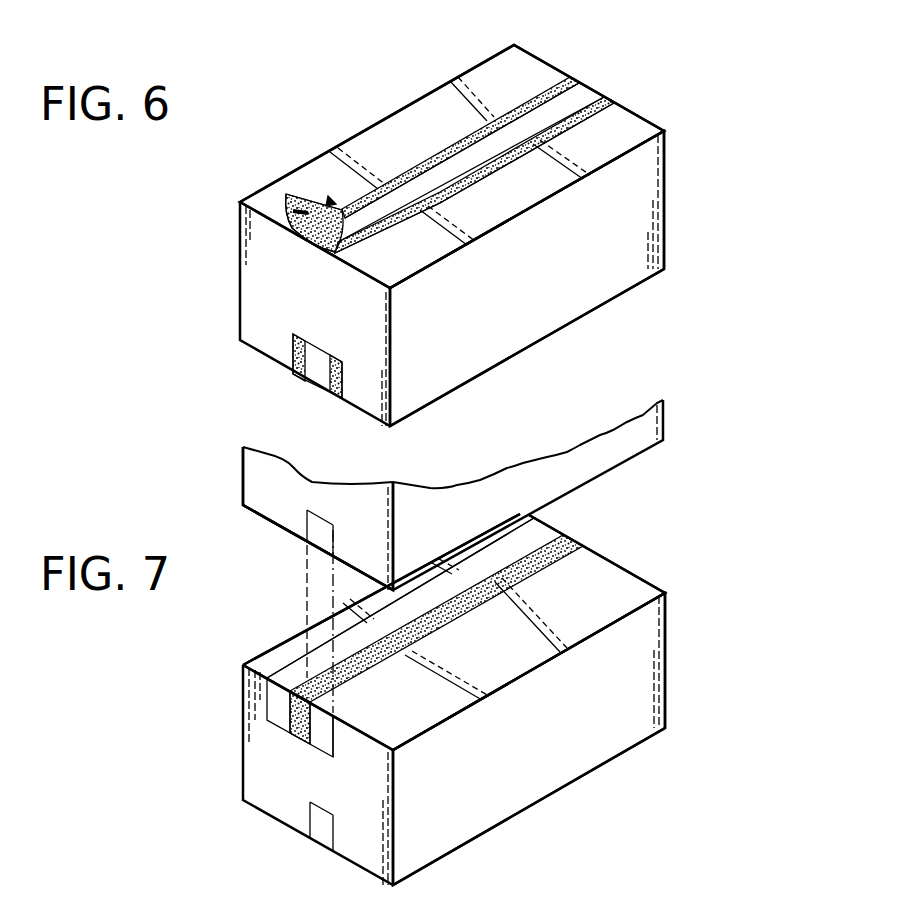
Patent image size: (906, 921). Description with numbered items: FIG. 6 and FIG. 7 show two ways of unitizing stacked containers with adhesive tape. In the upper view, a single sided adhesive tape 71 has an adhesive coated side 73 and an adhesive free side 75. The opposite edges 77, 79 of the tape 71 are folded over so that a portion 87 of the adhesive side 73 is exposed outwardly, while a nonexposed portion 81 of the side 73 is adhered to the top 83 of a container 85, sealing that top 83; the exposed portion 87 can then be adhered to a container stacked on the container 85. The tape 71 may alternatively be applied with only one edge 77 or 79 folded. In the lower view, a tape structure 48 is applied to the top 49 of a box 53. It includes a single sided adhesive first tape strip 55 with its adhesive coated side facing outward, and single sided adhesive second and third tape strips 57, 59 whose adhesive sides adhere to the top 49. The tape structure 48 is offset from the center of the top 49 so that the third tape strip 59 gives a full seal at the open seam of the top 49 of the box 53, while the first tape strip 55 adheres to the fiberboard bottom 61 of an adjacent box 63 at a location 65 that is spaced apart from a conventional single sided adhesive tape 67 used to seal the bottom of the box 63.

In FIG. 6, the single sided adhesive tape 71 is at (588, 83).
In FIG. 6, the adhesive coated side 73 is at (286, 194).
In FIG. 6, the adhesive free side 75 is at (534, 120).
In FIG. 6, the edge 77 is at (470, 192).
In FIG. 6, the edge 79 is at (300, 193).
In FIG. 6, the nonexposed portion 81 is at (300, 238).
In FIG. 6, the top 83 is at (608, 130).
In FIG. 6, the container 85 is at (619, 214).
In FIG. 6, the exposed portion 87 is at (435, 150).
In FIG. 7, the tape structure 48 is at (276, 710).
In FIG. 7, the top 49 is at (607, 590).
In FIG. 7, the box 53 is at (624, 682).
In FIG. 7, the first tape strip 55 is at (300, 737).
In FIG. 7, the second tape strip 57 is at (292, 677).
In FIG. 7, the third tape strip 59 is at (556, 577).
In FIG. 7, the fiberboard bottom 61 is at (262, 513).
In FIG. 7, the adjacent box 63 is at (668, 411).
In FIG. 7, the location 65 is at (304, 538).
In FIG. 7, the single sided adhesive tape 67 is at (320, 527).